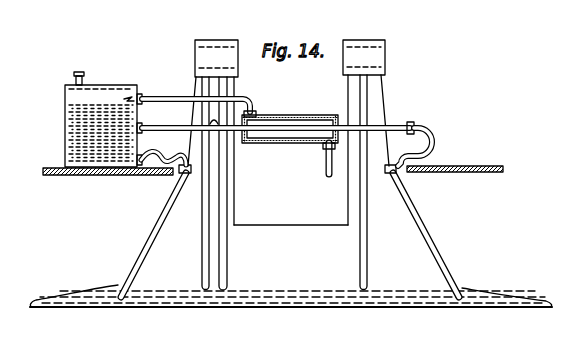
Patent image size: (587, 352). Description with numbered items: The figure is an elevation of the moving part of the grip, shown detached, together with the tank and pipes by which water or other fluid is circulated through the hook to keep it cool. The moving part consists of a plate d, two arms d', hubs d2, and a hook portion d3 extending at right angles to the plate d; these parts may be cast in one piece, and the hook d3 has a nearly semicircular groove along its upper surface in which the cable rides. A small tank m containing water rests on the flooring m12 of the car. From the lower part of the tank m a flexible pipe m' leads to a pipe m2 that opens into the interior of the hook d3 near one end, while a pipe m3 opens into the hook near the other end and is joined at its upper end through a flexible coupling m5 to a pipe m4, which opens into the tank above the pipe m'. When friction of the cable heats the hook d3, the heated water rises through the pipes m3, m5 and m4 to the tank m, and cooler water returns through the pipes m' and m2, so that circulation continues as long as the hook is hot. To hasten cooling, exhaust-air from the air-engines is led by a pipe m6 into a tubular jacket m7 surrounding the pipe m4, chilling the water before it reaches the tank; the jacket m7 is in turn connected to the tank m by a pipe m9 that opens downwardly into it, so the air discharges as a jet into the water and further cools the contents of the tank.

The tank m is at (82, 119).
The flexible pipe m' is at (163, 151).
The pipe m2 is at (152, 252).
The pipe m3 is at (467, 237).
The pipe m4 is at (402, 117).
The flexible coupling m5 is at (437, 142).
The pipe m6 is at (325, 175).
The tubular jacket m7 is at (305, 103).
The pipe m9 is at (162, 97).
The flooring m12 is at (100, 178).
The plate d is at (291, 245).
The arm d' is at (332, 147).
The hub d2 is at (290, 44).
The hook portion d3 is at (182, 308).